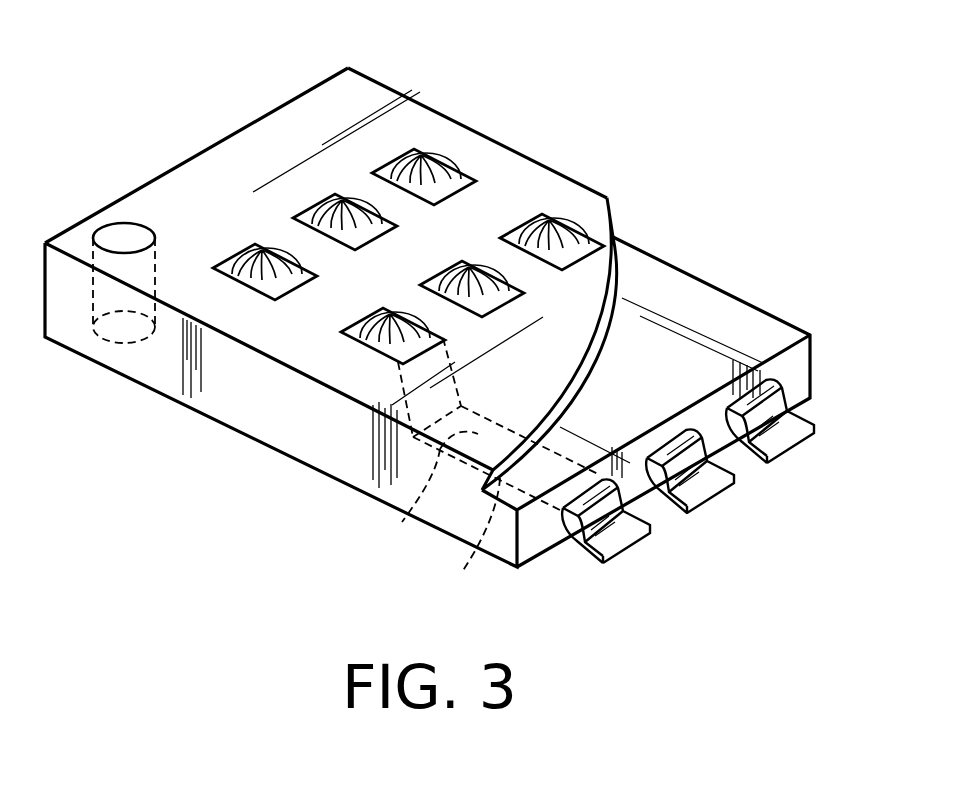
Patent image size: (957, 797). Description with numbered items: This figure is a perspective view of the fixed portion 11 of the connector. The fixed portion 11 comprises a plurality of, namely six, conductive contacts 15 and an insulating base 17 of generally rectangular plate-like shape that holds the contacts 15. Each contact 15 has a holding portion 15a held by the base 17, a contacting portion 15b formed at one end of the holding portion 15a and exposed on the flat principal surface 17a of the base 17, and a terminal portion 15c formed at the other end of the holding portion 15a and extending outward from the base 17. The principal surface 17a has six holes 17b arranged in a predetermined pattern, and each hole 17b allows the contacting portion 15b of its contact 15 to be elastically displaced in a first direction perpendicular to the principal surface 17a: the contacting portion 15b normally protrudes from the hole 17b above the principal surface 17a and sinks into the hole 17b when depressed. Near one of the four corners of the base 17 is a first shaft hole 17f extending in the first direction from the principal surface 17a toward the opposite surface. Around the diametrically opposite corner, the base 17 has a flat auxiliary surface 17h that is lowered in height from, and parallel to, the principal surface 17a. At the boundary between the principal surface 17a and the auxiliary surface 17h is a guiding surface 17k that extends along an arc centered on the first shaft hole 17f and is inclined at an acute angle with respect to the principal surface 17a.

The fixed portion 11 is at (690, 268).
The conductive contact 15 is at (402, 522).
The holding portion 15a is at (462, 539).
The contacting portion 15b is at (342, 205).
The terminal portion 15c is at (617, 533).
The insulating base 17 is at (735, 295).
The principal surface 17a is at (575, 190).
The hole 17b is at (313, 208).
The first shaft hole 17f is at (124, 232).
The auxiliary surface 17h is at (753, 328).
The guiding surface 17k is at (577, 392).